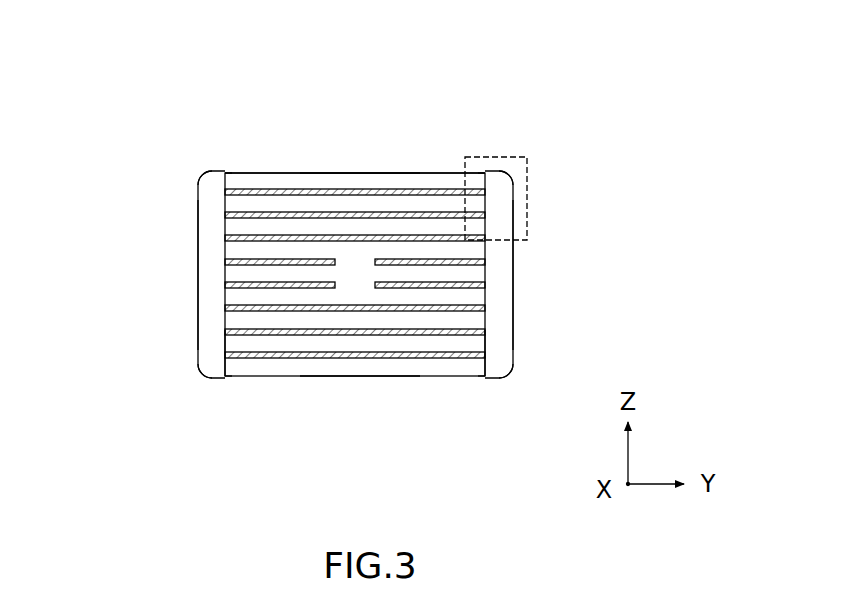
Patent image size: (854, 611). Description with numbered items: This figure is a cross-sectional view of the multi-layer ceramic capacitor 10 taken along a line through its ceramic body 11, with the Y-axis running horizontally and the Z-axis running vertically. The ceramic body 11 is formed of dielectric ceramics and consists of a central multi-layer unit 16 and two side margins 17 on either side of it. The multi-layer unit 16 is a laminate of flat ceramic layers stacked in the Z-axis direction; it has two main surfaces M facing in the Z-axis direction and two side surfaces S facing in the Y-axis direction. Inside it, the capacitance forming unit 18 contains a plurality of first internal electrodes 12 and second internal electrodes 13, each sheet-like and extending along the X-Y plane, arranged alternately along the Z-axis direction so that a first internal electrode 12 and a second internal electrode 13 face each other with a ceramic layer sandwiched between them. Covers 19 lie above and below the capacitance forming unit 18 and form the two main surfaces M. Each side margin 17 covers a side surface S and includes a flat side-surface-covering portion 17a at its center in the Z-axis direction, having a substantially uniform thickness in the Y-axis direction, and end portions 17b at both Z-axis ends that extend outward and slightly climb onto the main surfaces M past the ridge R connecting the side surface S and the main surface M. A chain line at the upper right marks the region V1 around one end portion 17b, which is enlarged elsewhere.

The multi-layer ceramic capacitor 10 is at (140, 70).
The ceramic body 11 is at (530, 110).
The first internal electrodes 12 is at (247, 330).
The second internal electrodes 13 is at (393, 353).
The multi-layer unit 16 is at (353, 145).
The side margins 17 is at (215, 270).
The side-surface-covering portion 17a is at (176, 230).
The end portions 17b is at (200, 170).
The capacitance forming unit 18 is at (355, 273).
The covers 19 is at (395, 173).
The ridge R is at (225, 172).
The main surfaces M is at (333, 173).
The side surfaces S is at (225, 342).
The region V1 is at (528, 183).